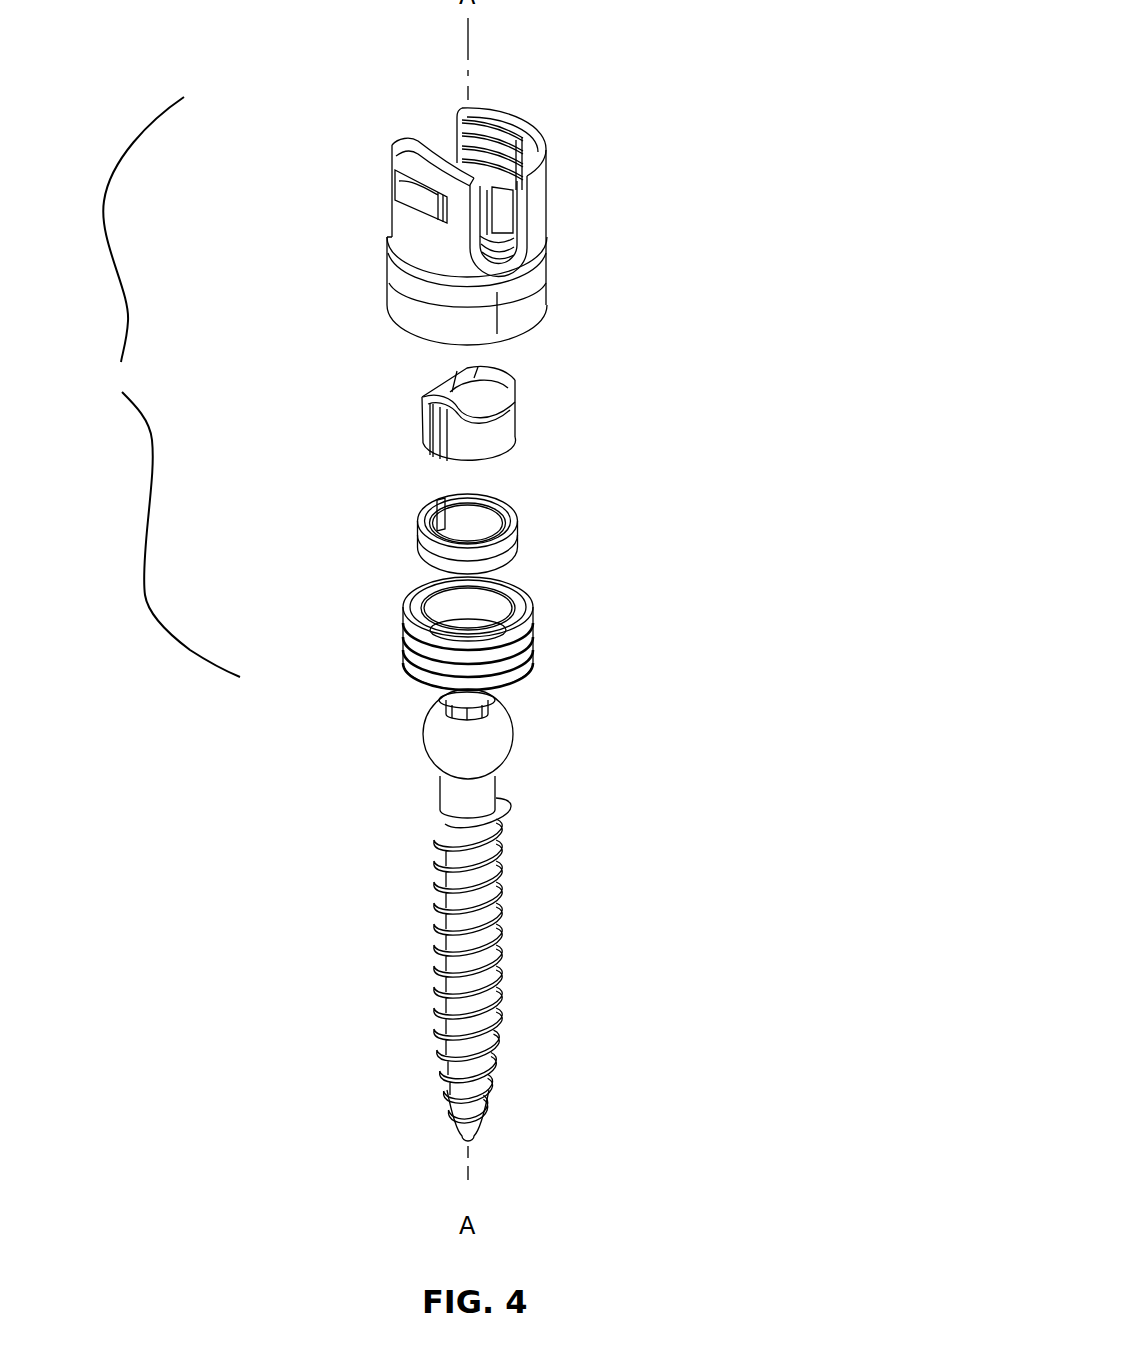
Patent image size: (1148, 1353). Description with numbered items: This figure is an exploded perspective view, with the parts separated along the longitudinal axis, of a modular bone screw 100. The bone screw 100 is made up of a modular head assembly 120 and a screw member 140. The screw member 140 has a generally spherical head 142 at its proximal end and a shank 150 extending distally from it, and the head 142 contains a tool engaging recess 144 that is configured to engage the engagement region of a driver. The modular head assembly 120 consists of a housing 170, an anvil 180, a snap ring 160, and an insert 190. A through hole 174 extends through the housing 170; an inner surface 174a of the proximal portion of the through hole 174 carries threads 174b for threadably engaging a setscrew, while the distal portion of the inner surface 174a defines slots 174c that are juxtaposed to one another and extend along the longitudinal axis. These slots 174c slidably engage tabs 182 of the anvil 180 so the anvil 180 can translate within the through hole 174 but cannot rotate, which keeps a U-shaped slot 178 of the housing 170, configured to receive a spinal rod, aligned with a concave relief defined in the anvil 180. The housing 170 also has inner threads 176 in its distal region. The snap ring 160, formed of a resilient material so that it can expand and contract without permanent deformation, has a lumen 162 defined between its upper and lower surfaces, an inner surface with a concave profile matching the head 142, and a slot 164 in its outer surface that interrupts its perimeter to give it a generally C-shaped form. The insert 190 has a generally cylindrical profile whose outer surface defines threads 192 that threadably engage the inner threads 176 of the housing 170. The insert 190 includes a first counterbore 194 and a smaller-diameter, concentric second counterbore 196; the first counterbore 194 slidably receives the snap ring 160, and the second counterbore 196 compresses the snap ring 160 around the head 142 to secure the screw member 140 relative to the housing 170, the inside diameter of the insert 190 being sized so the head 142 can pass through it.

The bone screw 100 is at (710, 178).
The modular head assembly 120 is at (164, 387).
The screw member 140 is at (558, 902).
The head 142 is at (416, 735).
The tool engaging recess 144 is at (506, 698).
The shank 150 is at (445, 973).
The snap ring 160 is at (586, 522).
The lumen 162 is at (492, 501).
The slot 164 is at (440, 504).
The housing 170 is at (605, 277).
The through hole 174 is at (451, 140).
The inner surface 174a is at (483, 170).
The threads 174b is at (494, 132).
The slots 174c is at (499, 212).
The inner threads 176 is at (487, 258).
The U-shaped slot 178 is at (424, 134).
The anvil 180 is at (575, 413).
The tabs 182 is at (425, 431).
The insert 190 is at (567, 641).
The threads 192 is at (405, 645).
The first counterbore 194 is at (511, 591).
The second counterbore 196 is at (434, 603).